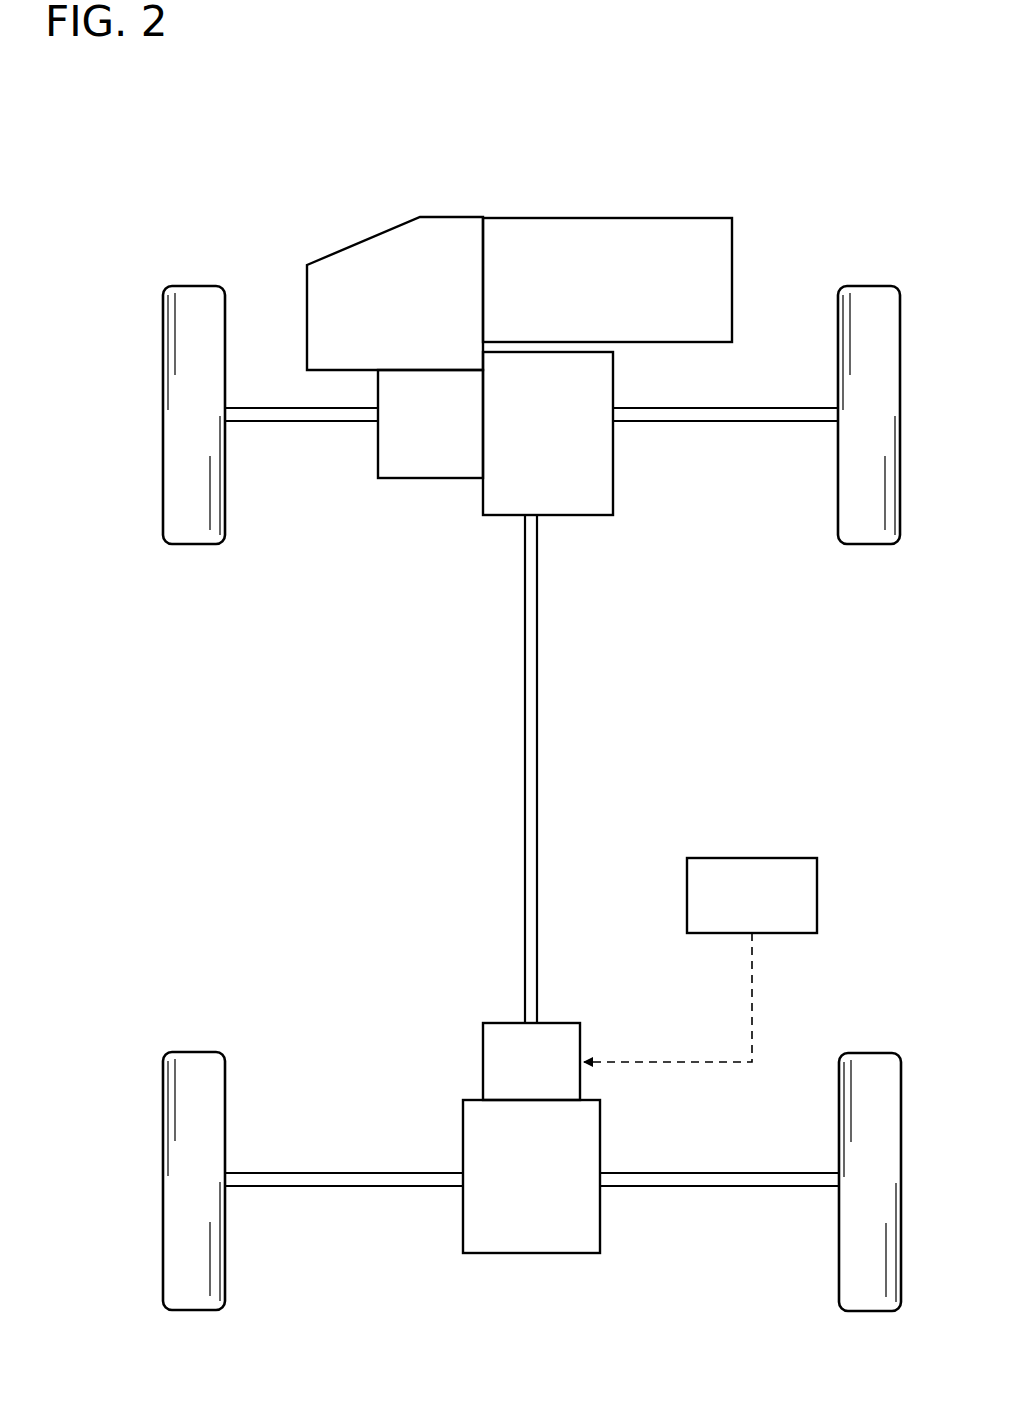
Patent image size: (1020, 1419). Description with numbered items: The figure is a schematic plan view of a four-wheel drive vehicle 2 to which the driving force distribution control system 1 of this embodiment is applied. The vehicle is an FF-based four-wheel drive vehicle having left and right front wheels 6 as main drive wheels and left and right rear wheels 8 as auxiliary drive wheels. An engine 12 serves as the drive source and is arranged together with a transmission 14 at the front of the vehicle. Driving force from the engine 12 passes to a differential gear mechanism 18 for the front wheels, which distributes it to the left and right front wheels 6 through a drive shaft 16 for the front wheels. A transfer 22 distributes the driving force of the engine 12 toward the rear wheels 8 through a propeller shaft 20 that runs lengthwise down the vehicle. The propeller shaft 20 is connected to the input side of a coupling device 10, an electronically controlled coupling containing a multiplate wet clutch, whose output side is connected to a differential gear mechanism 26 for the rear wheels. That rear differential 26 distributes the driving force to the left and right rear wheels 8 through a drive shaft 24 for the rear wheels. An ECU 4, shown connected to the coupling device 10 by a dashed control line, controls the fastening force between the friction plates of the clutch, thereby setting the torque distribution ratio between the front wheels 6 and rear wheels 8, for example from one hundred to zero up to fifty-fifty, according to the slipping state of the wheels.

The driving force distribution control system 1 is at (256, 143).
The four-wheel drive vehicle 2 is at (782, 243).
The ECU 4 is at (798, 858).
The front wheels 6 is at (196, 286).
The rear wheels 8 is at (196, 1052).
The coupling device 10 is at (483, 1062).
The engine 12 is at (553, 218).
The transmission 14 is at (375, 233).
The drive shaft for the front wheels 16 is at (272, 421).
The differential gear mechanism for the front wheels 18 is at (410, 478).
The propeller shaft 20 is at (525, 732).
The transfer 22 is at (604, 515).
The drive shaft for the rear wheels 24 is at (272, 1186).
The differential gear mechanism for the rear wheels 26 is at (585, 1253).